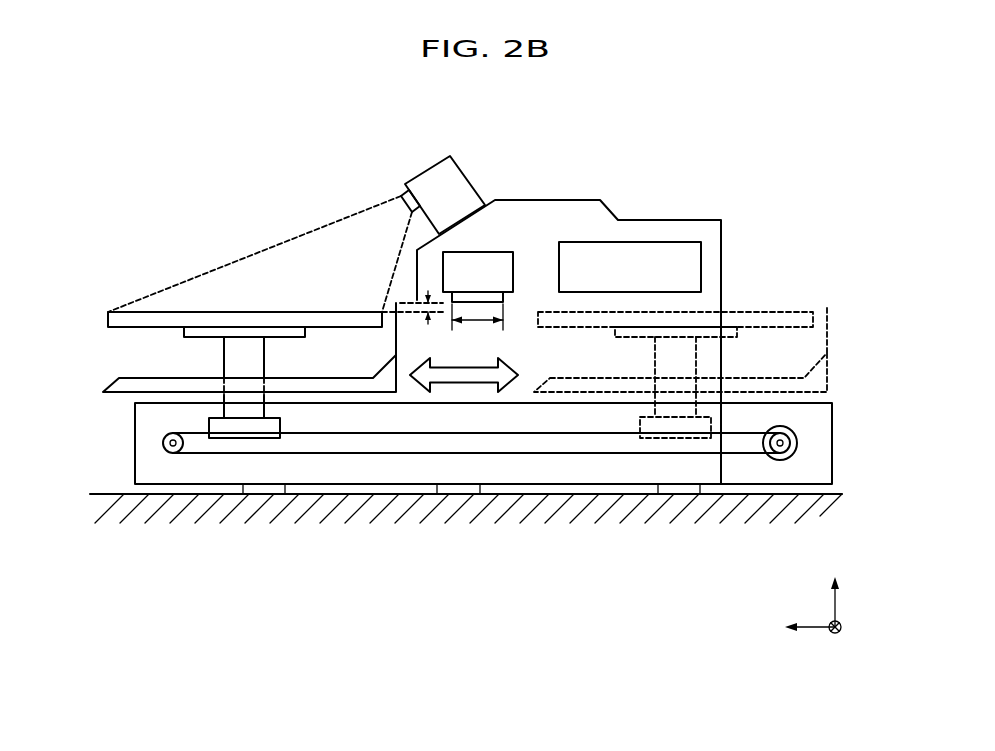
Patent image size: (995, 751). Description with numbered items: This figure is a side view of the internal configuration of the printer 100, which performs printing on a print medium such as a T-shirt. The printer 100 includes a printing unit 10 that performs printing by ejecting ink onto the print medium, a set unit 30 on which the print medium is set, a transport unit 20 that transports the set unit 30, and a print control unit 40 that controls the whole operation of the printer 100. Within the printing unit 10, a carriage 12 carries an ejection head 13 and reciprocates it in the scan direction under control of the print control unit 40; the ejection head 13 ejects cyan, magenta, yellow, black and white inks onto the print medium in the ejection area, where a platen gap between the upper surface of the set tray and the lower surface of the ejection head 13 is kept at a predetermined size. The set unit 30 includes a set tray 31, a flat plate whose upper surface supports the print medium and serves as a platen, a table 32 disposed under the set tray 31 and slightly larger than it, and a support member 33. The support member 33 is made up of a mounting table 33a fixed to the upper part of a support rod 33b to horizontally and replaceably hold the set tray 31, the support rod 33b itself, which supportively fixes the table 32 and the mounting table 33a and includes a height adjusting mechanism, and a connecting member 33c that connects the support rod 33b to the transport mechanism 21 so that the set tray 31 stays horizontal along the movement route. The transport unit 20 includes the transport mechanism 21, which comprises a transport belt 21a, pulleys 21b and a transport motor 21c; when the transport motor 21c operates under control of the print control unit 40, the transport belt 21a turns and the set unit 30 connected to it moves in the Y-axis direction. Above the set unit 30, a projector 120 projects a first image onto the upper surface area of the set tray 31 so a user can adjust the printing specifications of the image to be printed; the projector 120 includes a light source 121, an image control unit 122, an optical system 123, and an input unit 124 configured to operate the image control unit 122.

The printer 100 is at (565, 115).
The printing unit 10 is at (498, 232).
The carriage 12 is at (503, 258).
The ejection head 13 is at (498, 297).
The print control unit 40 is at (648, 260).
The projector 120 is at (505, 112).
The light source 121 is at (303, 214).
The image control unit 122 is at (303, 214).
The optical system 123 is at (303, 214).
The input unit 124 is at (428, 175).
The set unit 30 is at (138, 278).
The set tray 31 is at (182, 320).
The table 32 is at (122, 388).
The support member 33 is at (135, 358).
The mounting table 33a is at (207, 334).
The support rod 33b is at (224, 355).
The connecting member 33c is at (209, 422).
The transport unit 20 is at (117, 428).
The transport mechanism 21 is at (133, 445).
The transport belt 21a is at (462, 433).
The pulleys 21b is at (173, 453).
The transport motor 21c is at (795, 431).